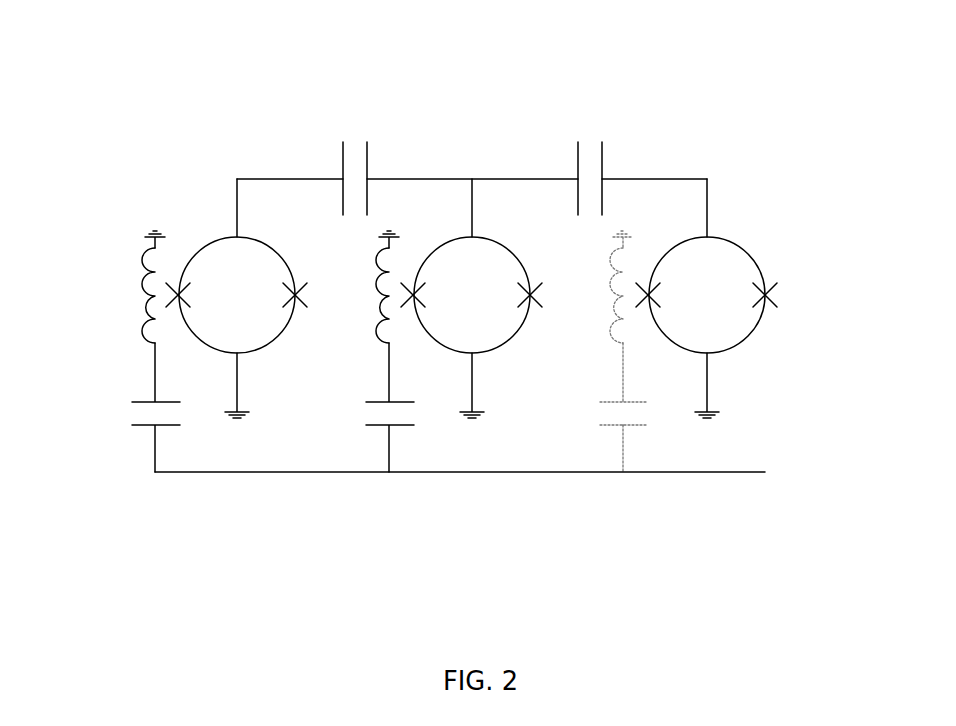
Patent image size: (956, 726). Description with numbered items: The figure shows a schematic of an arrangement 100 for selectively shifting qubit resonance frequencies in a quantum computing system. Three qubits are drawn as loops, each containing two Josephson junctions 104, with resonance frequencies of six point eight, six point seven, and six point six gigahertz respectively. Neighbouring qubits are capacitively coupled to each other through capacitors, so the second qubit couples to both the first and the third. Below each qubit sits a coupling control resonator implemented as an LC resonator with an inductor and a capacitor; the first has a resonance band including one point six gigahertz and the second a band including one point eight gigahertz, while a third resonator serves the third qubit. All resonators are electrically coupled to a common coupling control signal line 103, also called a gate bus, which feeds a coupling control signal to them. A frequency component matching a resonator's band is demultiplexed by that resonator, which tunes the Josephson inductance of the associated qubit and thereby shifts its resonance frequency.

The arrangement 100 is at (113, 88).
The coupling control signal line 103 is at (693, 472).
The Josephson junction 104 is at (178, 293).